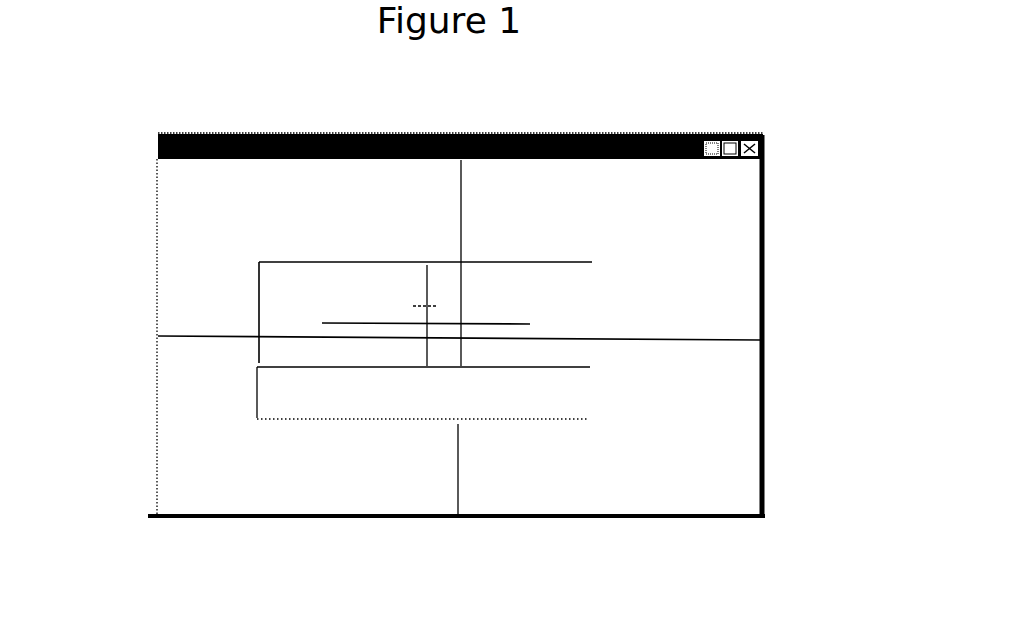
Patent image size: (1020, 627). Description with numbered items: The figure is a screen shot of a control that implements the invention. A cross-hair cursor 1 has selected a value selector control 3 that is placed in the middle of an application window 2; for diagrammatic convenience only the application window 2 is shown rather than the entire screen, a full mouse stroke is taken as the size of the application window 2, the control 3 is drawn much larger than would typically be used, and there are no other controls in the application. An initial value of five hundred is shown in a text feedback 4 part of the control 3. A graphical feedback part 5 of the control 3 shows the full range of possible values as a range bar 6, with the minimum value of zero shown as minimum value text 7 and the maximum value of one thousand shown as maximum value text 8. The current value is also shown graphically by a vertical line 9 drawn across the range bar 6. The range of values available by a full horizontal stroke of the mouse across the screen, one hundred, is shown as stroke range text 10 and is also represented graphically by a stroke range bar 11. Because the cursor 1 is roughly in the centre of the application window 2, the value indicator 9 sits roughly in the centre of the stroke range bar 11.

The cross-hair cursor 1 is at (459, 345).
The application window 2 is at (649, 519).
The value selector control 3 is at (596, 426).
The text feedback 4 is at (286, 390).
The graphical feedback part 5 is at (254, 276).
The range bar 6 is at (484, 329).
The minimum value text 7 is at (317, 327).
The maximum value text 8 is at (536, 330).
The vertical line 9 is at (432, 288).
The stroke range text 10 is at (329, 293).
The stroke range bar 11 is at (414, 300).